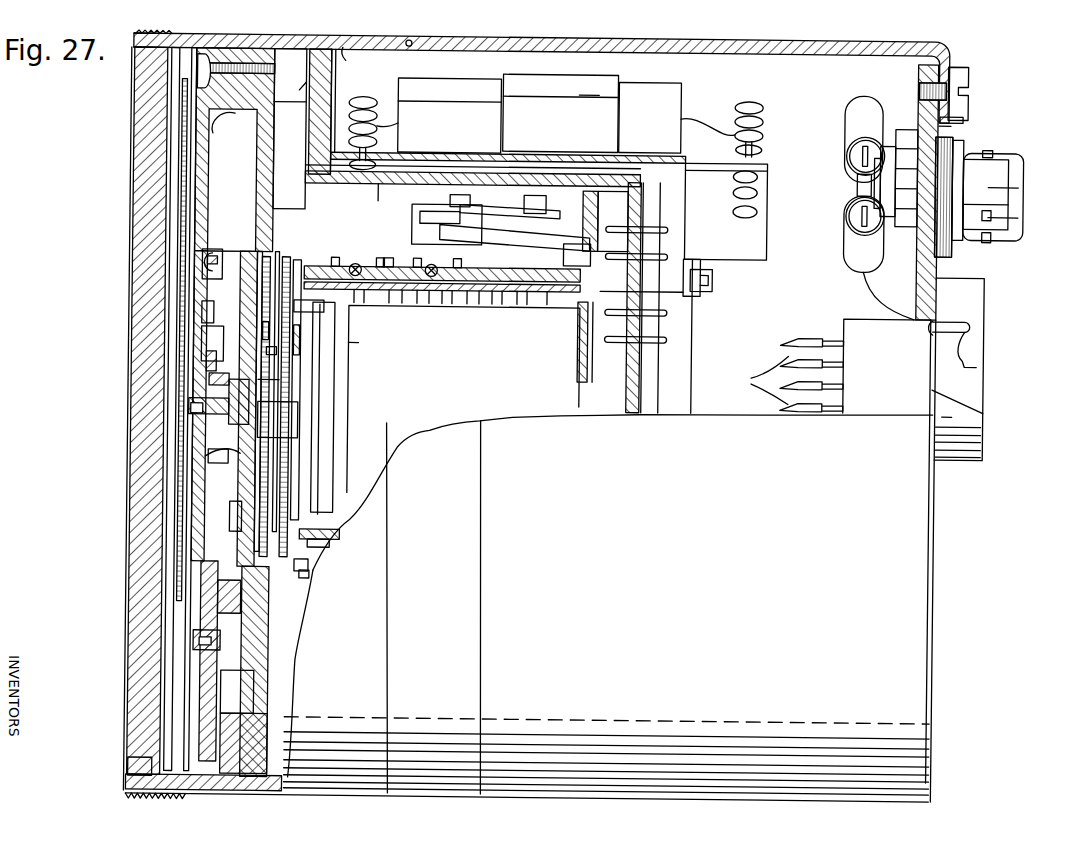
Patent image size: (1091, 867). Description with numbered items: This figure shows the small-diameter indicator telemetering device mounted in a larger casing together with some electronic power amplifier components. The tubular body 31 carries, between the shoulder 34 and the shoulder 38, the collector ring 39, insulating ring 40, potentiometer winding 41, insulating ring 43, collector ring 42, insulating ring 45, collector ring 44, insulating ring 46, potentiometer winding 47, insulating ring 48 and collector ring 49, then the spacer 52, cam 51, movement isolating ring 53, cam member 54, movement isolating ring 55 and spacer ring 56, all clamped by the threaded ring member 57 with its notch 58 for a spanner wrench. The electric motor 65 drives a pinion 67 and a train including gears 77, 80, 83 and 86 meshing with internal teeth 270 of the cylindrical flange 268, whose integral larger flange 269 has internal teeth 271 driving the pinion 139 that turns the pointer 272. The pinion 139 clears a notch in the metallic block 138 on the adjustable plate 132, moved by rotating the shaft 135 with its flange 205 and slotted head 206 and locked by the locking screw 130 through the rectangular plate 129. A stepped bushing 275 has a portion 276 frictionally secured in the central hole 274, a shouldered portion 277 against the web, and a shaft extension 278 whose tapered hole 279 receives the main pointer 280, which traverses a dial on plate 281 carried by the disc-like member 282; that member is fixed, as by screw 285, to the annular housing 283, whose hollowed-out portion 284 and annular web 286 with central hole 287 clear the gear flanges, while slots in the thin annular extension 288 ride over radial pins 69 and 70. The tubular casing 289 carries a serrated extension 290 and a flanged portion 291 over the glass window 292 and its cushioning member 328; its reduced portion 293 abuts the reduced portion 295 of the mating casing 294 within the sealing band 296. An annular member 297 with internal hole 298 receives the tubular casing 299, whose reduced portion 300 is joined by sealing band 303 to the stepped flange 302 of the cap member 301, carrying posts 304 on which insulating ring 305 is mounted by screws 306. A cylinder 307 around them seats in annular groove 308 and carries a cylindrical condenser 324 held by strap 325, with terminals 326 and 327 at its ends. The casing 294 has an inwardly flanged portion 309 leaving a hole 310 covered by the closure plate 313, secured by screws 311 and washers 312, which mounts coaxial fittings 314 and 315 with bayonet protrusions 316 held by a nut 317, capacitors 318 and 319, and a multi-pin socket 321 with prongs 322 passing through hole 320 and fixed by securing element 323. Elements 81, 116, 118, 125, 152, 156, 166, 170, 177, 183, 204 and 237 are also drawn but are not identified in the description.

The tubular body 31 is at (556, 300).
The shoulder 34 is at (316, 407).
The shoulder 38 is at (458, 300).
The collector ring 39 is at (335, 258).
The insulating ring 40 is at (343, 260).
The potentiometer winding 41 is at (363, 265).
The collector ring 42 is at (383, 300).
The insulating ring 43 is at (374, 300).
The collector ring 44 is at (403, 300).
The insulating ring 45 is at (393, 262).
The insulating ring 46 is at (415, 300).
The potentiometer winding 47 is at (429, 300).
The insulating ring 48 is at (438, 300).
The collector ring 49 is at (452, 300).
The cam 51 is at (486, 300).
The movement isolating ring 52 is at (477, 300).
The movement isolating ring 53 is at (501, 300).
The cam member 54 is at (509, 300).
The movement isolating ring 55 is at (527, 300).
The spacer ring 56 is at (535, 300).
The clamping ring member 57 is at (560, 300).
The notch 58 is at (590, 268).
The electric motor 65 is at (511, 400).
The pinion 67 is at (280, 413).
The radial pin 69 is at (303, 247).
The radial pin 70 is at (310, 578).
The gear 77 is at (263, 315).
The gear 80 is at (282, 273).
The pinion 81 is at (263, 330).
The gear 83 is at (280, 380).
The gear 86 is at (270, 353).
The lever 116 is at (388, 213).
The pin 118 is at (633, 267).
The block 125 is at (595, 212).
The rectangular plate 129 is at (205, 260).
The locking screw 130 is at (205, 274).
The plate 132 is at (205, 248).
The shaft 135 is at (210, 315).
The metallic block 138 is at (233, 588).
The pinion 139 is at (217, 660).
The lever 152 is at (440, 236).
The spring 156 is at (455, 195).
The block 166 is at (585, 205).
The arm 170 is at (545, 255).
The plate 177 is at (520, 213).
The frame column 183 is at (600, 350).
The contact 204 is at (372, 345).
The flange 205 is at (198, 360).
The head 206 is at (197, 333).
The plate 237 is at (247, 520).
The cylindrical flange 268 is at (300, 598).
The flange 269 is at (250, 683).
The internal teeth 270 is at (305, 590).
The internal teeth 271 is at (232, 670).
The pointer 272 is at (193, 565).
The central hole 274 is at (230, 450).
The stepped bushing 275 is at (230, 380).
The portion 276 is at (195, 401).
The shouldered portion 277 is at (235, 455).
The shaft extension 278 is at (190, 412).
The tapered hole 279 is at (200, 425).
The main pointer 280 is at (182, 165).
The plate 281 is at (195, 143).
The disc-like member 282 is at (184, 100).
The annular housing 283 is at (278, 72).
The hollowed-out portion 284 is at (228, 125).
The screw 285 is at (200, 71).
The web 286 is at (277, 96).
The central hole 287 is at (268, 213).
The annular extension 288 is at (313, 557).
The tubular casing 289 is at (343, 743).
The serrated extension 290 is at (140, 33).
The flanged portion 291 is at (132, 40).
The glass window 292 is at (158, 147).
The portion of reduced diameter 293 is at (453, 50).
The tubular casing 294 is at (592, 42).
The portion of reduced diameter 295 is at (480, 50).
The sealing band 296 is at (415, 47).
The annular ring-like member 297 is at (308, 88).
The internal hole 298 is at (312, 187).
The tubular casing 299 is at (397, 177).
The portion of reduced diameter 300 is at (580, 177).
The cap member 301 is at (687, 175).
The stepped flange portion 302 is at (642, 163).
The sealing band 303 is at (590, 170).
The posts 304 is at (680, 300).
The insulating ring 305 is at (693, 240).
The screws 306 is at (713, 287).
The cylinder 307 is at (457, 157).
The annular groove 308 is at (333, 153).
The inwardly flanged portion 309 is at (947, 62).
The hole 310 is at (937, 125).
The screws 311 is at (960, 82).
The washers 312 is at (948, 120).
The closure plate 313 is at (925, 272).
The male coaxial fitting 314 is at (1020, 183).
The male coaxial fitting 315 is at (1020, 227).
The protrusions 316 is at (989, 153).
The nut 317 is at (903, 137).
The capacitor 318 is at (853, 113).
The capacitor 319 is at (857, 260).
The hole 320 is at (947, 327).
The multi-pin socket 321 is at (996, 375).
The prongs 322 is at (765, 390).
The securing element 323 is at (900, 320).
The cylindrical condenser 324 is at (420, 93).
The strap 325 is at (587, 93).
The terminal 326 is at (763, 132).
The terminal 327 is at (472, 186).
The cushioning member 328 is at (128, 757).